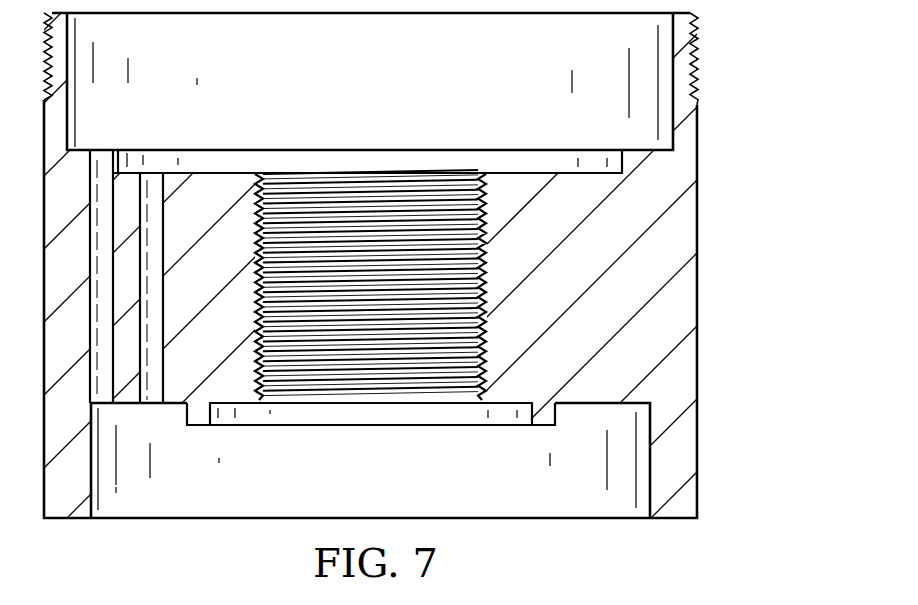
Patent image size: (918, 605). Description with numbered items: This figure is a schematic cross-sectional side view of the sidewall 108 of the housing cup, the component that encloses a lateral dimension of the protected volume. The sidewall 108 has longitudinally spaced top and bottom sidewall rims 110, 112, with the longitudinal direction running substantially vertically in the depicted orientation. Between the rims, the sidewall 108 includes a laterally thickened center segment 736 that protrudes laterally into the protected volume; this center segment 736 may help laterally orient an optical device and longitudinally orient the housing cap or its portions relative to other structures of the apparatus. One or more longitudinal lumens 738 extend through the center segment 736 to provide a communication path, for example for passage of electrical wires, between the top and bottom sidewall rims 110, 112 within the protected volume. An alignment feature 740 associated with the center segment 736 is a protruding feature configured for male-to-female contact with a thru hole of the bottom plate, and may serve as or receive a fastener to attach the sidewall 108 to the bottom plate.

The sidewall 108 is at (722, 229).
The top sidewall rim 110 is at (702, 30).
The bottom sidewall rim 112 is at (702, 507).
The laterally thickened center segment 736 is at (461, 327).
The longitudinal lumens 738 is at (113, 162).
The alignment feature 740 is at (197, 416).